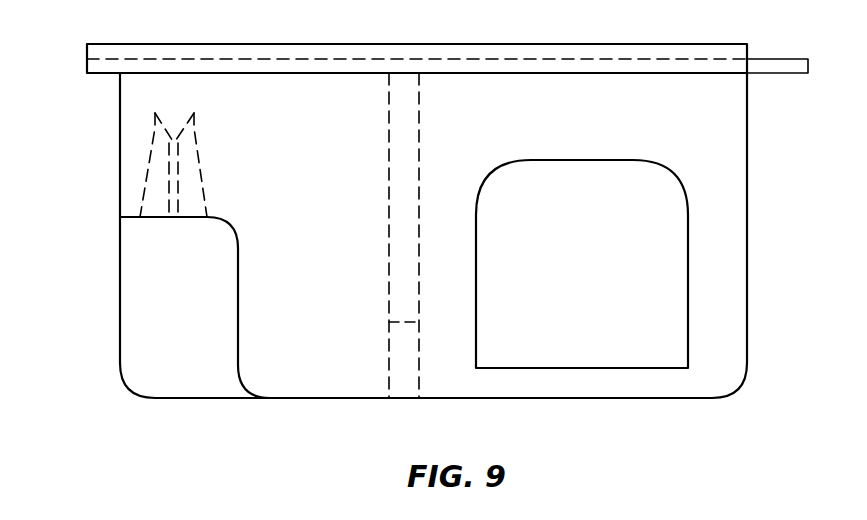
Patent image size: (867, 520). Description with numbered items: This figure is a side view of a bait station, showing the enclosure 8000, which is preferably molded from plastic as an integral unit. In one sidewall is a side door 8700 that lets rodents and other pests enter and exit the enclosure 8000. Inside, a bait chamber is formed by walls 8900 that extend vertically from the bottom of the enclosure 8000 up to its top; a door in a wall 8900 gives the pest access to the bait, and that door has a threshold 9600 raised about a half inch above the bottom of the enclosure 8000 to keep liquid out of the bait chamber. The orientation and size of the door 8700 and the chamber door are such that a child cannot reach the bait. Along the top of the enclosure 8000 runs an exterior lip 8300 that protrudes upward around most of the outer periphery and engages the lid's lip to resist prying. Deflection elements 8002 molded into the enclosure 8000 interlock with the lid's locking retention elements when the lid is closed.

The enclosure 8000 is at (578, 398).
The exterior lip 8300 is at (633, 44).
The walls 8900 is at (420, 128).
The threshold 9600 is at (389, 333).
The door 8700 is at (595, 177).
The deflection elements 8002 is at (153, 137).